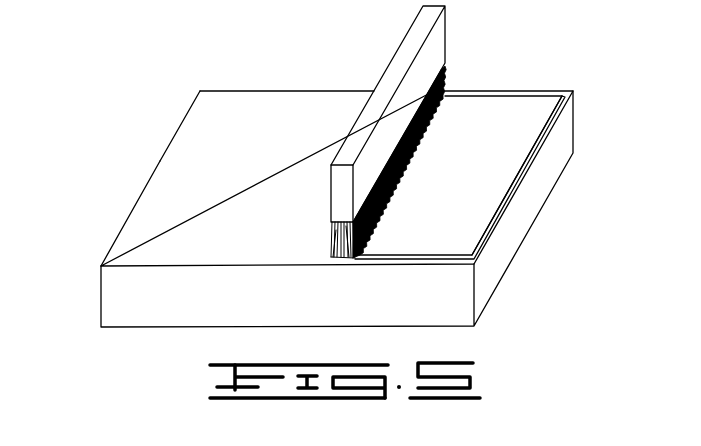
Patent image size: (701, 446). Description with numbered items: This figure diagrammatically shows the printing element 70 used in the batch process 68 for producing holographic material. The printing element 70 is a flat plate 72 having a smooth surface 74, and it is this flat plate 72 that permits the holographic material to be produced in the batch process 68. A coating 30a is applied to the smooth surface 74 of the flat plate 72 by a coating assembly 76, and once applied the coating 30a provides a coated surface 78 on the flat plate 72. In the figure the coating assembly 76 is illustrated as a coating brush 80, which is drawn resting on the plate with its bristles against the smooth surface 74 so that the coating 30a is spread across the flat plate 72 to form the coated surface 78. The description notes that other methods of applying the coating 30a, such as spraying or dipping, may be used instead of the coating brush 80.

The batch process 68 is at (229, 63).
The printing element 70 is at (131, 212).
The flat plate 72 is at (182, 121).
The smooth surface 74 is at (173, 177).
The coating assembly 76 is at (470, 45).
The coated surface 78 is at (470, 113).
The coating brush 80 is at (401, 64).
The coating 30a is at (527, 96).